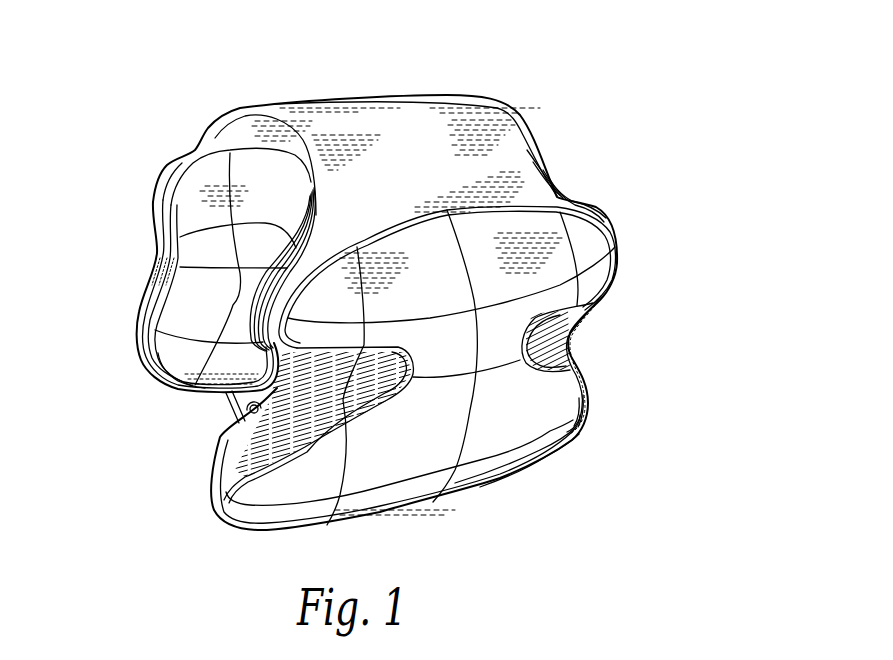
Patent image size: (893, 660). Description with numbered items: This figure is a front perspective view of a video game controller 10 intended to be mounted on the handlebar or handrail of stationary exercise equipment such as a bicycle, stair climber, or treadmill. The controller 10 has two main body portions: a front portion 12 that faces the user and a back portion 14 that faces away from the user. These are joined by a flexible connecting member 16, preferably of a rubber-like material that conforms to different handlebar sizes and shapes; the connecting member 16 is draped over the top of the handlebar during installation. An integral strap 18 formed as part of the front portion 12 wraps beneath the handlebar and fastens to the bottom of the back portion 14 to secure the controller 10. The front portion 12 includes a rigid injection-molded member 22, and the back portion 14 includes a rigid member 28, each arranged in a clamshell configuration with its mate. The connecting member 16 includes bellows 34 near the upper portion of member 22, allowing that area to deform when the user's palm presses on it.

The controller 10 is at (652, 152).
The front portion 12 is at (557, 450).
The back portion 14 is at (141, 288).
The flexible connecting member 16 is at (433, 97).
The integral strap 18 is at (228, 413).
The member 22 is at (403, 465).
The rigid member 28 is at (210, 325).
The bellows 34 is at (577, 199).